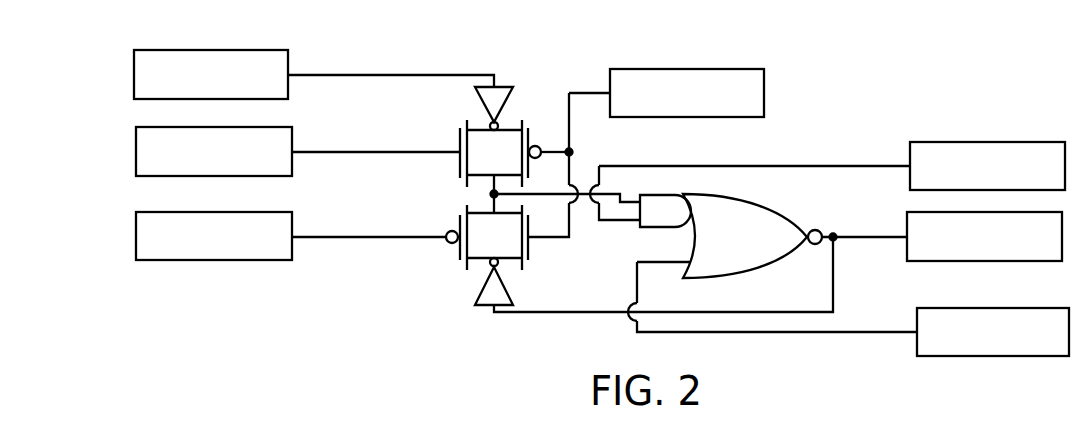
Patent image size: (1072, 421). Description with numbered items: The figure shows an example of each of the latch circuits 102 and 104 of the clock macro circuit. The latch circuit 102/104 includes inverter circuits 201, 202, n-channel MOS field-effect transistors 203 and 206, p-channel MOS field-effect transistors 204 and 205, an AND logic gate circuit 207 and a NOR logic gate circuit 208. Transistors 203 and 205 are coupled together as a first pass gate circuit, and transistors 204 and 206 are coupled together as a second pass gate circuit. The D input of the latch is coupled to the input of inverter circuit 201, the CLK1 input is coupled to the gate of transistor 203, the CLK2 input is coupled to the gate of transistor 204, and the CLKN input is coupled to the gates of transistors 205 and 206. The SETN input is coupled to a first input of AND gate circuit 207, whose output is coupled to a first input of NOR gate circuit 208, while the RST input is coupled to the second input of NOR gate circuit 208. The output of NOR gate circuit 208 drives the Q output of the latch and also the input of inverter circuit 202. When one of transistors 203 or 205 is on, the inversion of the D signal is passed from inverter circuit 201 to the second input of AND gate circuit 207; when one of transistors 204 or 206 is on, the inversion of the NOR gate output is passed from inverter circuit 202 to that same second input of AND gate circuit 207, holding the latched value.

The latch circuit 102 is at (601, 180).
The latch circuit 104 is at (391, 38).
The inverter circuit 201 is at (509, 87).
The inverter circuit 202 is at (482, 305).
The n-channel MOS field-effect transistor 203 is at (458, 172).
The p-channel MOS field-effect transistor 204 is at (458, 257).
The p-channel MOS field-effect transistor 205 is at (528, 130).
The n-channel MOS field-effect transistor 206 is at (528, 258).
The AND logic gate circuit 207 is at (647, 229).
The NOR logic gate circuit 208 is at (783, 212).